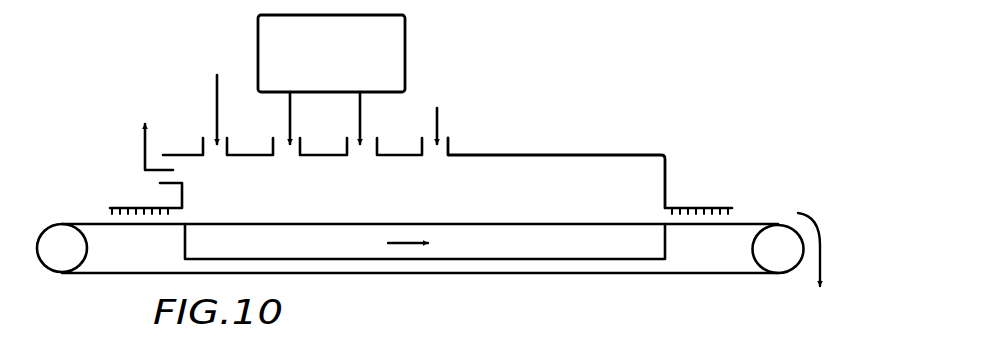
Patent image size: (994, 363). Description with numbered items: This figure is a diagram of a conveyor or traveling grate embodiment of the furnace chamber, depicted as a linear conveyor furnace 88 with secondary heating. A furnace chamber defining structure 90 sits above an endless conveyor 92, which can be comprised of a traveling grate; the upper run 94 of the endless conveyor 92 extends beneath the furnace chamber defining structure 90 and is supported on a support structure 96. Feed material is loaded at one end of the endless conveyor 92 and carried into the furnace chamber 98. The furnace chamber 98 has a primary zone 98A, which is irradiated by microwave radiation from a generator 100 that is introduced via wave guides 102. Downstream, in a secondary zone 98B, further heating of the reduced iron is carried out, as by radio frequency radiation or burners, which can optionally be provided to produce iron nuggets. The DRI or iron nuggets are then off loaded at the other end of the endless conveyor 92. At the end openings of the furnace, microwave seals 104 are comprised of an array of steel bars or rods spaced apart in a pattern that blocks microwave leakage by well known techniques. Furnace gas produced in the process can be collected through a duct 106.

The linear conveyor furnace 88 is at (620, 132).
The furnace chamber defining structure 90 is at (536, 153).
The endless conveyor 92 is at (72, 221).
The upper run 94 is at (474, 224).
The support structure 96 is at (603, 250).
The furnace chamber 98 is at (423, 205).
The primary zone 98A is at (348, 194).
The secondary zone 98B is at (637, 205).
The generator 100 is at (409, 48).
The wave guides 102 is at (203, 142).
The microwave seals 104 is at (134, 206).
The duct 106 is at (182, 152).